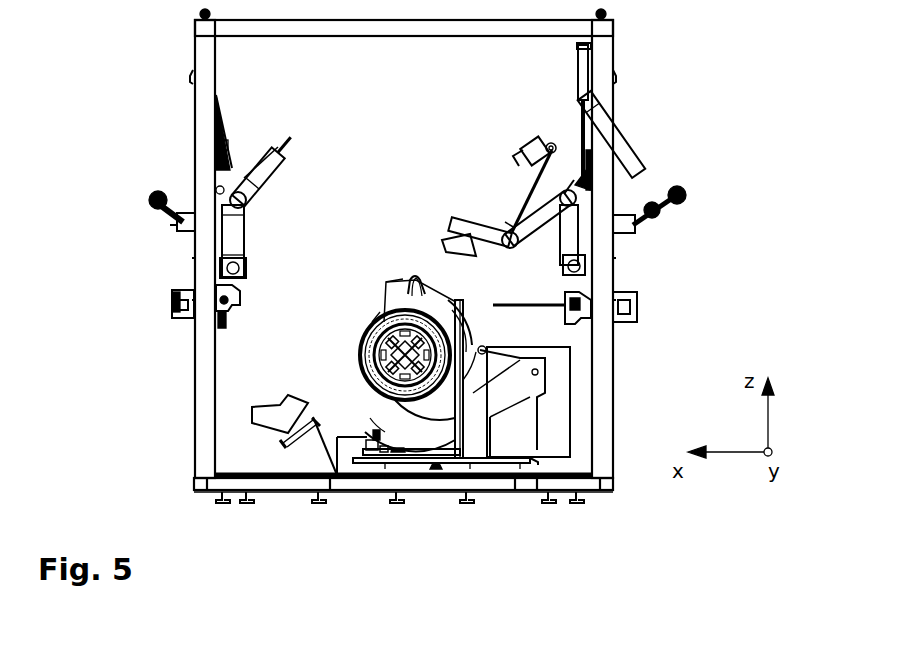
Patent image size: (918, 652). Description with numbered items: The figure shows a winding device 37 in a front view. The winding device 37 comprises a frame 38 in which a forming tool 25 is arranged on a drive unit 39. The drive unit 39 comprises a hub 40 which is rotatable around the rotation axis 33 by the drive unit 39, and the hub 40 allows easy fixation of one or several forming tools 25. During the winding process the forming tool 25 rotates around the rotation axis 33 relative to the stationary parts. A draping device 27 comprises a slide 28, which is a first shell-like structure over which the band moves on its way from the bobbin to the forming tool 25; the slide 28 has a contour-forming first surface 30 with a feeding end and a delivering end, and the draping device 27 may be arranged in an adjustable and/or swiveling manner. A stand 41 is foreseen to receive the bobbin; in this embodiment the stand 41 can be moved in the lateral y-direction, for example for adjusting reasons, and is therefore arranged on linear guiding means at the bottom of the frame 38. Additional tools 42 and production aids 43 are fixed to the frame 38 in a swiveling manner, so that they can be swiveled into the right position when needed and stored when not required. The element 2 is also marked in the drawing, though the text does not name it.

The spindle head / tool holder 2 is at (330, 354).
The forming tool 25 is at (358, 366).
The draping device 27 is at (340, 420).
The slide 28 is at (432, 405).
The contour-forming first surface 30 is at (456, 395).
The rotation axis 33 is at (397, 402).
The winding device 37 is at (185, 118).
The frame 38 is at (212, 190).
The drive unit 39 is at (522, 398).
The hub 40 is at (358, 340).
The stand 41 is at (290, 435).
The additional tools 42 is at (158, 255).
The production aids 43 is at (198, 213).